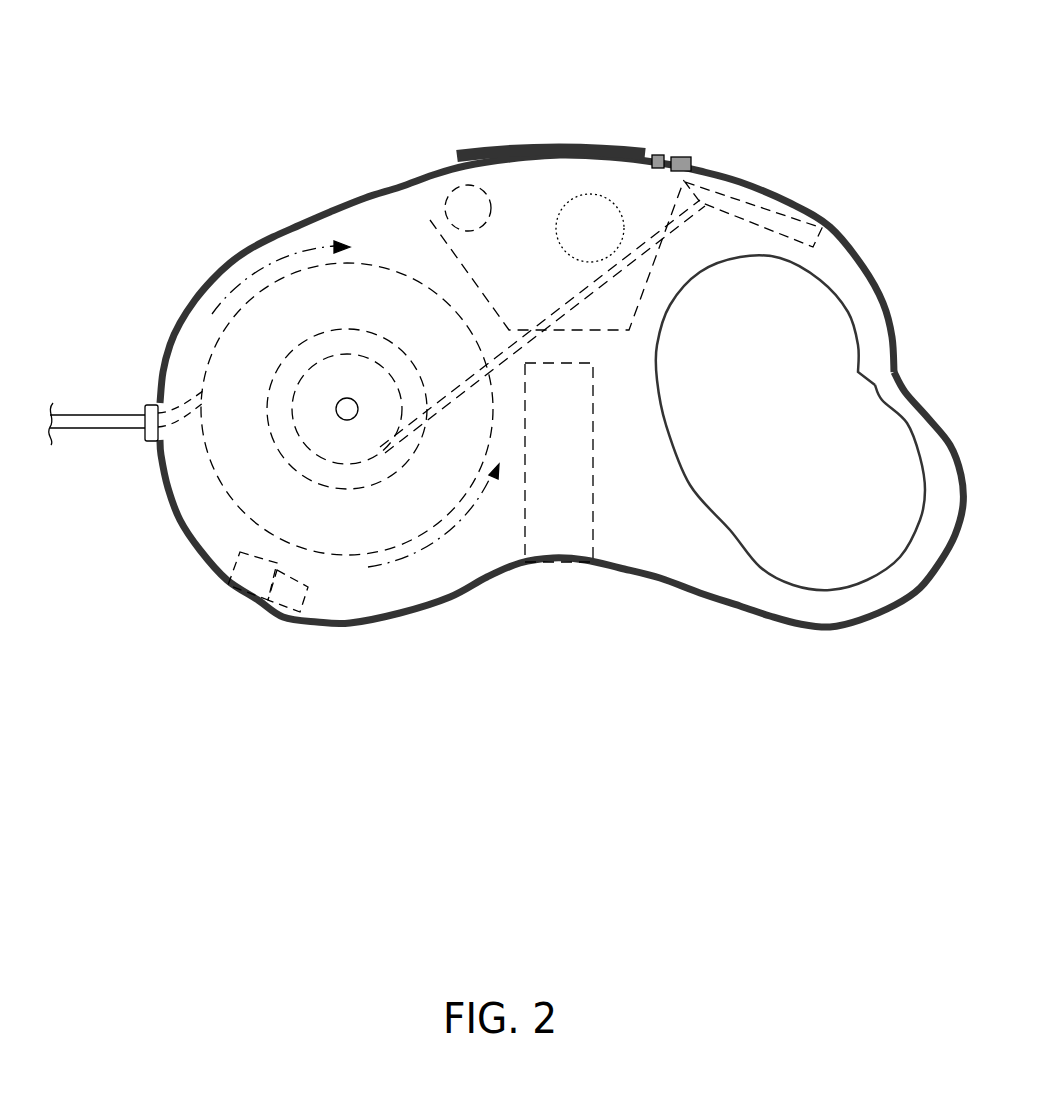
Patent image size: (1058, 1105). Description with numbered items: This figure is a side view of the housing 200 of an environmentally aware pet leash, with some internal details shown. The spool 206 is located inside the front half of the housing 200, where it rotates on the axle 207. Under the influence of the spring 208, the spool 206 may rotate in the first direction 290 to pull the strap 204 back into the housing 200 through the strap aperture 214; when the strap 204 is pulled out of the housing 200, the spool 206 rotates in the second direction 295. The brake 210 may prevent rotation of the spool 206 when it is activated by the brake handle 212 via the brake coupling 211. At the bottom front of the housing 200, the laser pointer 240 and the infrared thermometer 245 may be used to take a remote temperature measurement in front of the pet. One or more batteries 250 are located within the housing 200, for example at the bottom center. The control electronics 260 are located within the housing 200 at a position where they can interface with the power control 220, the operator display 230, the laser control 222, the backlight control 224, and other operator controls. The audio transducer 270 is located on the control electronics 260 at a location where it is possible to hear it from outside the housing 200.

The housing 200 is at (698, 595).
The strap 204 is at (95, 423).
The spool 206 is at (233, 500).
The axle 207 is at (345, 397).
The spring 208 is at (267, 423).
The brake 210 is at (307, 445).
The brake coupling 211 is at (588, 285).
The brake handle 212 is at (790, 210).
The strap aperture 214 is at (152, 432).
The power control 220 is at (597, 210).
The laser control 222 is at (660, 155).
The backlight control 224 is at (683, 158).
The operator display 230 is at (587, 143).
The laser pointer 240 is at (242, 590).
The infrared thermometer 245 is at (279, 610).
The one or more batteries 250 is at (563, 520).
The control electronics 260 is at (430, 220).
The audio transducer 270 is at (448, 197).
The first direction 290 is at (273, 263).
The second direction 295 is at (438, 540).